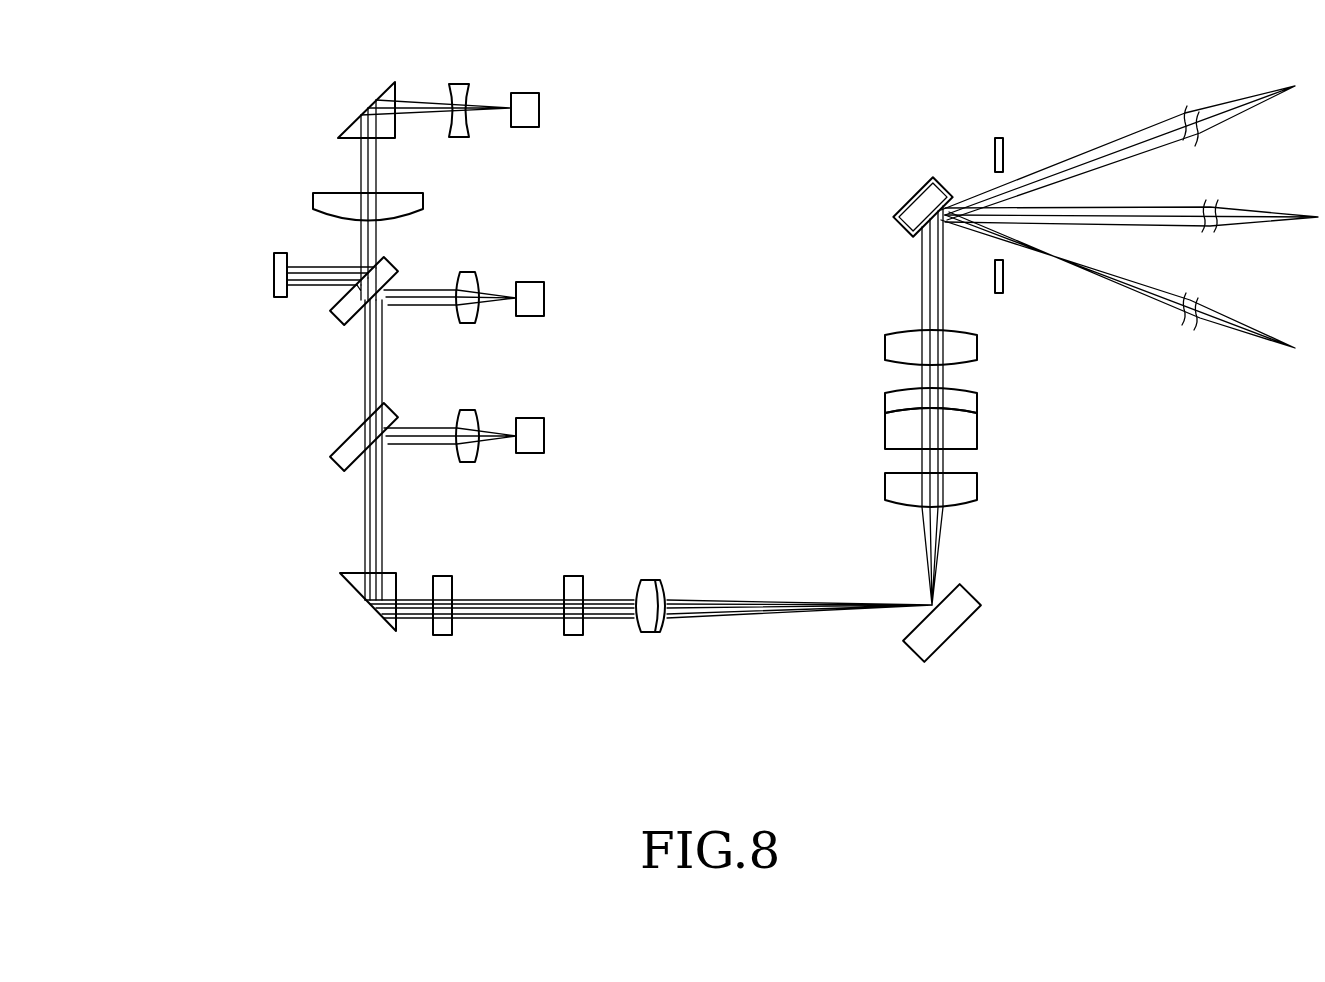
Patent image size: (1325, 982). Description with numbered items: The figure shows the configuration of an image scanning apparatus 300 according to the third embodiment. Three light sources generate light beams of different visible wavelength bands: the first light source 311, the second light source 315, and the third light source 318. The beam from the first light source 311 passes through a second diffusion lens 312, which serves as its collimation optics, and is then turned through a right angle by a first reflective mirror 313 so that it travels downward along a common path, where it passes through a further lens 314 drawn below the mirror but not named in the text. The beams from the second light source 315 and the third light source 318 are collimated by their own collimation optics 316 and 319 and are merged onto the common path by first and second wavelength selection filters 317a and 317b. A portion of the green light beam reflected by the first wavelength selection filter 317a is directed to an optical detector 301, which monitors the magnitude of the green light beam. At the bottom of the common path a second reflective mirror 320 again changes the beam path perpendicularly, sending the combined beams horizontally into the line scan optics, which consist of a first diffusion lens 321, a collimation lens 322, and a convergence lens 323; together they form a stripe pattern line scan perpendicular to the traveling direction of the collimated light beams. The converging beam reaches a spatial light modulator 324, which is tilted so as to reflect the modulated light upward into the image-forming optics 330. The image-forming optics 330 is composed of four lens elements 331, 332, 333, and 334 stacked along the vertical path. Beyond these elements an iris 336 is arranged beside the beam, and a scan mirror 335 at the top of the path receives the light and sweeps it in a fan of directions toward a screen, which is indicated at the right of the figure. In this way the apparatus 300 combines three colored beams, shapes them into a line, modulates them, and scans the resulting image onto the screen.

The image scanning apparatus 300 is at (753, 56).
The optical detector 301 is at (274, 272).
The first light source 311 is at (525, 93).
The second diffusion lens 312 is at (459, 84).
The first reflective mirror 313 is at (395, 82).
The collimating lens 314 is at (313, 205).
The second light source 315 is at (530, 316).
The collimation optics 316 is at (469, 323).
The first wavelength selection filter 317a is at (340, 318).
The second wavelength selection filter 317b is at (340, 457).
The third light source 318 is at (530, 453).
The collimation optics 319 is at (469, 462).
The second reflective mirror 320 is at (355, 590).
The first diffusion lens 321 is at (442, 635).
The collimation lens 322 is at (573, 635).
The convergence lens 323 is at (650, 632).
The spatial light modulator 324 is at (958, 638).
The image-forming optics 330 is at (1010, 418).
The image-forming optics element 331 is at (971, 490).
The image-forming optics element 332 is at (977, 432).
The image-forming optics element 333 is at (977, 406).
The image-forming optics element 334 is at (977, 347).
The scan mirror 335 is at (906, 204).
The iris 336 is at (998, 138).